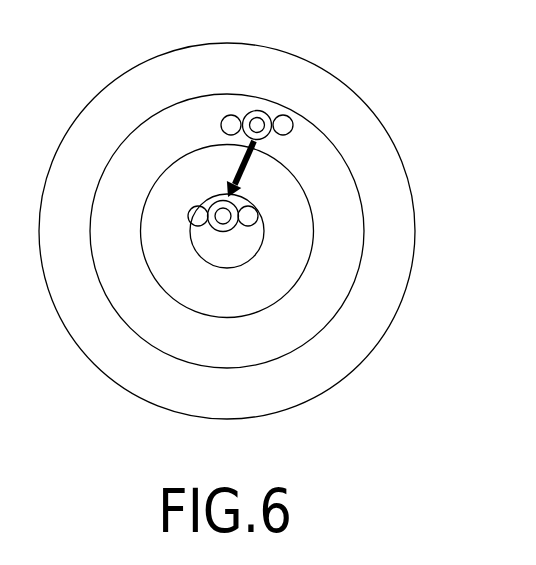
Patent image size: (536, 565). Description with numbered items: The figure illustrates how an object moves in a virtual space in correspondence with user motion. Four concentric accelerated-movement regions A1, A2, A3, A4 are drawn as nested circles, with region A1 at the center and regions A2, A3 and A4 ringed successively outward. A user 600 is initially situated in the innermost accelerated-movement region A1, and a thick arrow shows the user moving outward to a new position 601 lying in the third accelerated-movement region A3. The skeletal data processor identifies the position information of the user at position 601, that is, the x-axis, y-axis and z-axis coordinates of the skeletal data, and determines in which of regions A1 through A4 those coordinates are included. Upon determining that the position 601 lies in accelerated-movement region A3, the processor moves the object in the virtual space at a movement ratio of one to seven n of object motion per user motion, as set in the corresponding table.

The user 600 is at (213, 200).
The position of the user 601 is at (265, 103).
The accelerated-movement region A1 is at (227, 231).
The accelerated-movement region A2 is at (227, 231).
The accelerated-movement region A3 is at (227, 231).
The accelerated-movement region A4 is at (227, 231).